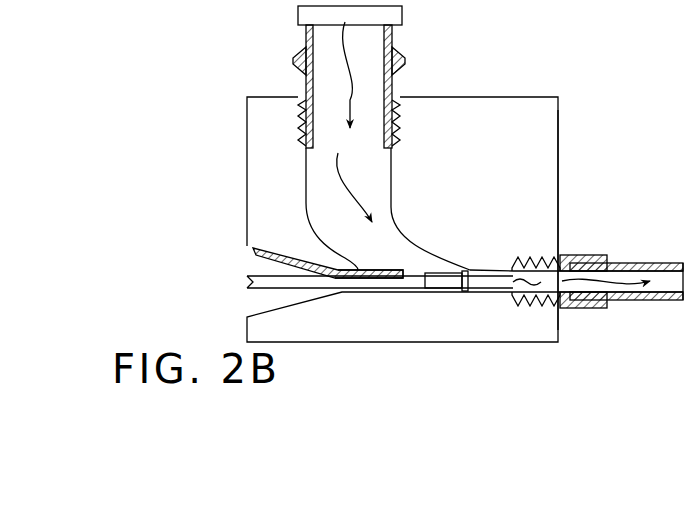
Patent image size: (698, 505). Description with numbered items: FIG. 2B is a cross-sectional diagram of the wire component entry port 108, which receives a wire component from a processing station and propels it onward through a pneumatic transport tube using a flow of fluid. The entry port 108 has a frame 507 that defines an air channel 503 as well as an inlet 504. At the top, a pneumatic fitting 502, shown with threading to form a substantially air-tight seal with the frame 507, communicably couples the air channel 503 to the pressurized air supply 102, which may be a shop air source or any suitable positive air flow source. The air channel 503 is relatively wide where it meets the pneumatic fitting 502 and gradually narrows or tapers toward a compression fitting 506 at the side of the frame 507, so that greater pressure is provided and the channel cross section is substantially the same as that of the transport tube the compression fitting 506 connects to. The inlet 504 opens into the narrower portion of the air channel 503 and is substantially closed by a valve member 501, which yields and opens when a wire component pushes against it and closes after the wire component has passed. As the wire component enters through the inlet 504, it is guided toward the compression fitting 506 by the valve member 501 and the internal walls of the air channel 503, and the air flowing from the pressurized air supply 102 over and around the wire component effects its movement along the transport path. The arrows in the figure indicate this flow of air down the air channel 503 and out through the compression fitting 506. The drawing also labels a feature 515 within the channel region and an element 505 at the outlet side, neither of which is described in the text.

The pressurized air supply 102 is at (392, 14).
The wire component entry port 108 is at (578, 107).
The valve member 501 is at (270, 262).
The pneumatic fitting 502 is at (398, 83).
The air channel 503 is at (380, 225).
The inlet 504 is at (240, 305).
The outlet tube 505 is at (605, 298).
The compression fitting 506 is at (580, 243).
The frame 507 is at (537, 163).
The channel 515 is at (405, 268).